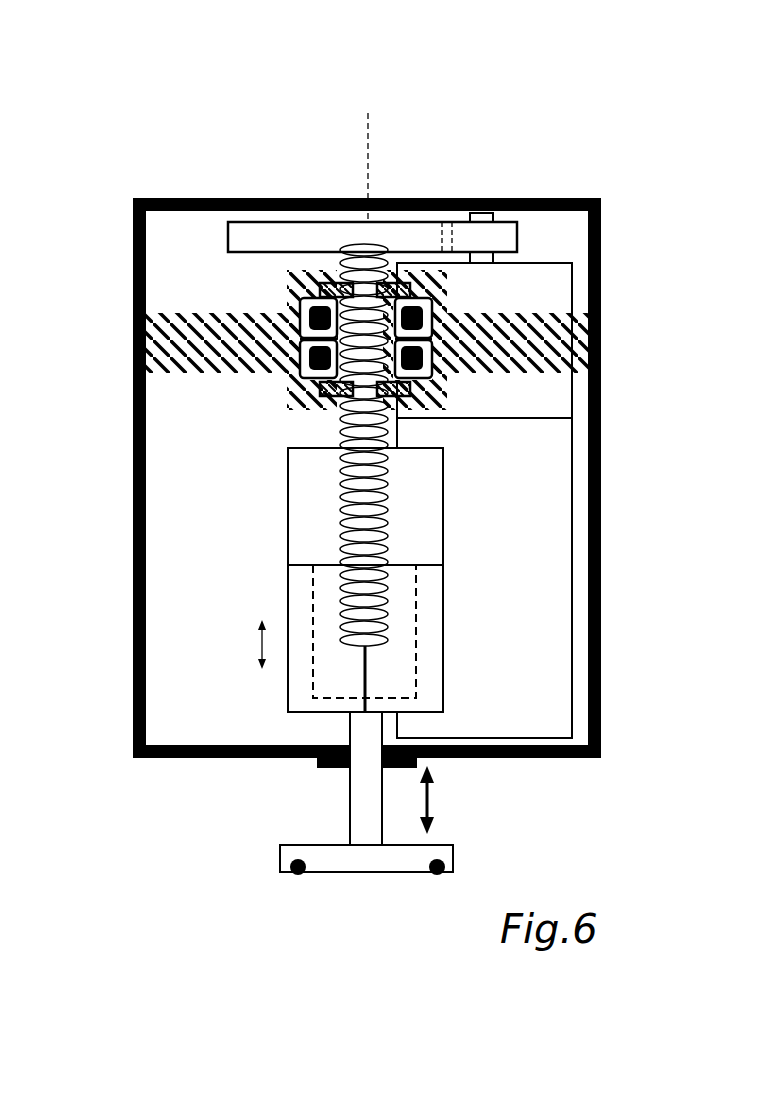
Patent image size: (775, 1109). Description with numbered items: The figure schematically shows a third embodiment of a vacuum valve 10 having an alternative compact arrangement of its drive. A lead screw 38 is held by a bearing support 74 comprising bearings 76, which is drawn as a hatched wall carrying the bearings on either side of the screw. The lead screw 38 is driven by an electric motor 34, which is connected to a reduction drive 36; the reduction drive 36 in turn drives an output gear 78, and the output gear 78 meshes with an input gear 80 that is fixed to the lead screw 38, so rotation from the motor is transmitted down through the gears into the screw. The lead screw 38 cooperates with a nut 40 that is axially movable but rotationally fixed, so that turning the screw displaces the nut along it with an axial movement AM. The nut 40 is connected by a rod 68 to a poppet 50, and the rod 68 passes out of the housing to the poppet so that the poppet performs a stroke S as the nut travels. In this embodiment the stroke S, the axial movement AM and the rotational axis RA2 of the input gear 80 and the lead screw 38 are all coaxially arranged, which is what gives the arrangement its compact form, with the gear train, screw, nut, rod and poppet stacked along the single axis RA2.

The actuator assembly 10 is at (630, 158).
The rotational axis RA2 is at (368, 126).
The electric motor 34 is at (520, 583).
The reduction drive 36 is at (520, 305).
The lead screw 38 is at (360, 520).
The nut 40 is at (288, 538).
The poppet 50 is at (455, 860).
The rod 68 is at (364, 790).
The bearing support 74 is at (143, 356).
The bearings 76 is at (297, 293).
The output gear 78 is at (518, 233).
The input gear 80 is at (281, 222).
The axial movement AM is at (258, 643).
The stroke S is at (432, 804).